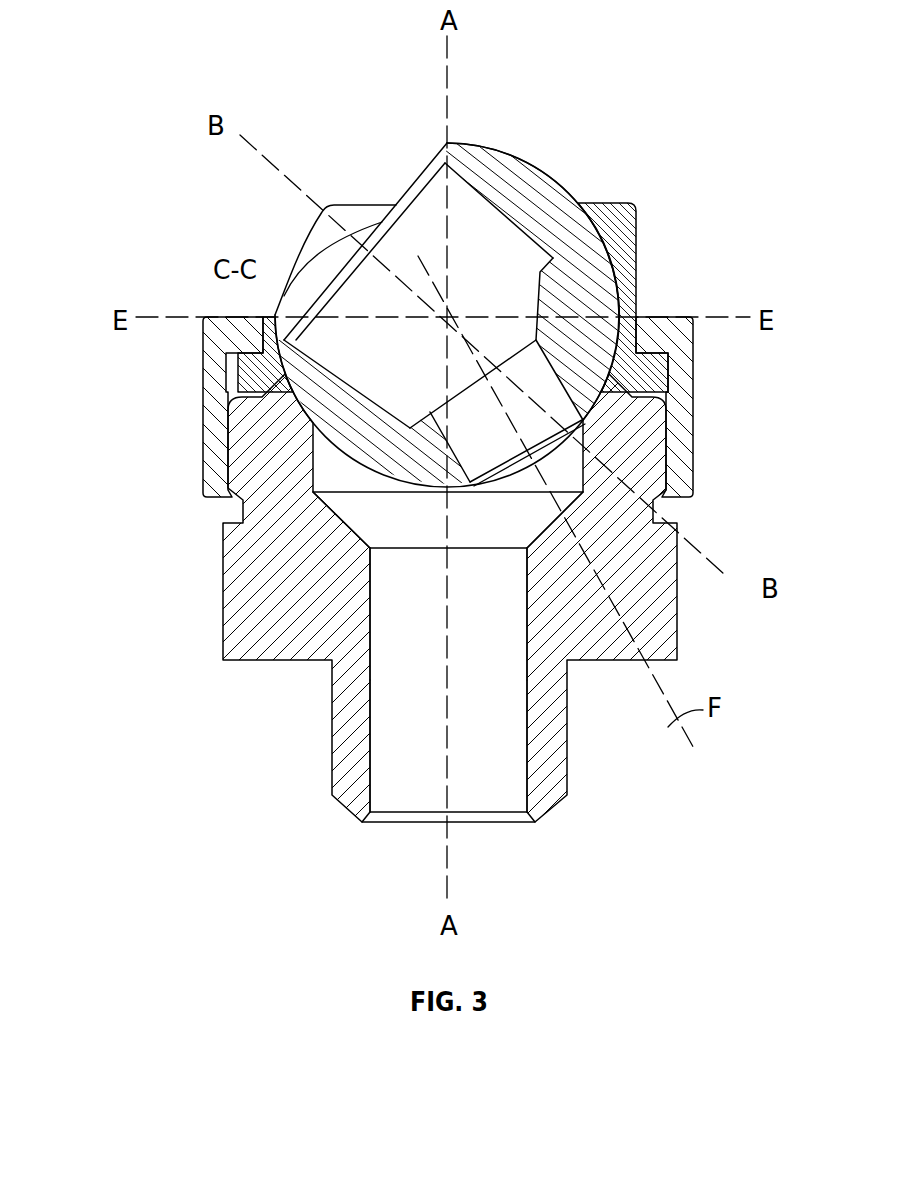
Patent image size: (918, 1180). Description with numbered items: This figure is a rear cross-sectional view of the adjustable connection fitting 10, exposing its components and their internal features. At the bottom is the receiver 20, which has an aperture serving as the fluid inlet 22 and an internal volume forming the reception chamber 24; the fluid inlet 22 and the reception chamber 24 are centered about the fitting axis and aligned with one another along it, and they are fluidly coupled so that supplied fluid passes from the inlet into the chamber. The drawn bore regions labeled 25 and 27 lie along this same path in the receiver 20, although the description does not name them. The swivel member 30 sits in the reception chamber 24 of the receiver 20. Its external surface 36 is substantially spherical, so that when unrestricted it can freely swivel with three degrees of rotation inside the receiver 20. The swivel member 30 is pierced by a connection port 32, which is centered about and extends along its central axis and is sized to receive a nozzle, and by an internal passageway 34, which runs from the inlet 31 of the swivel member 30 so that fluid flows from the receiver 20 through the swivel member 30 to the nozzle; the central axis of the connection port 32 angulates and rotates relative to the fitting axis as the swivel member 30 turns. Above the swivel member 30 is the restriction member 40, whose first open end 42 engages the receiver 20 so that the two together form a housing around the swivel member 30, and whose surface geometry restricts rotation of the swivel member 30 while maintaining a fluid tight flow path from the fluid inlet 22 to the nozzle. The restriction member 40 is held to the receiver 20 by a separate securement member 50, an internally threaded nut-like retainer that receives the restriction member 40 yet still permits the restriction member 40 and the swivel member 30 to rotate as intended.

The connection fitting 10 is at (176, 82).
The receiver 20 is at (222, 580).
The fluid inlet 22 is at (523, 823).
The reception chamber 24 is at (420, 527).
The housing bore 25 is at (427, 692).
The upper bore section 27 is at (420, 550).
The swivel member 30 is at (497, 158).
The inlet 31 is at (263, 267).
The connection port 32 is at (423, 215).
The internal passageway 34 is at (544, 372).
The external surface 36 is at (546, 175).
The restriction member 40 is at (630, 205).
The first open end 42 is at (362, 205).
The securement member 50 is at (690, 316).